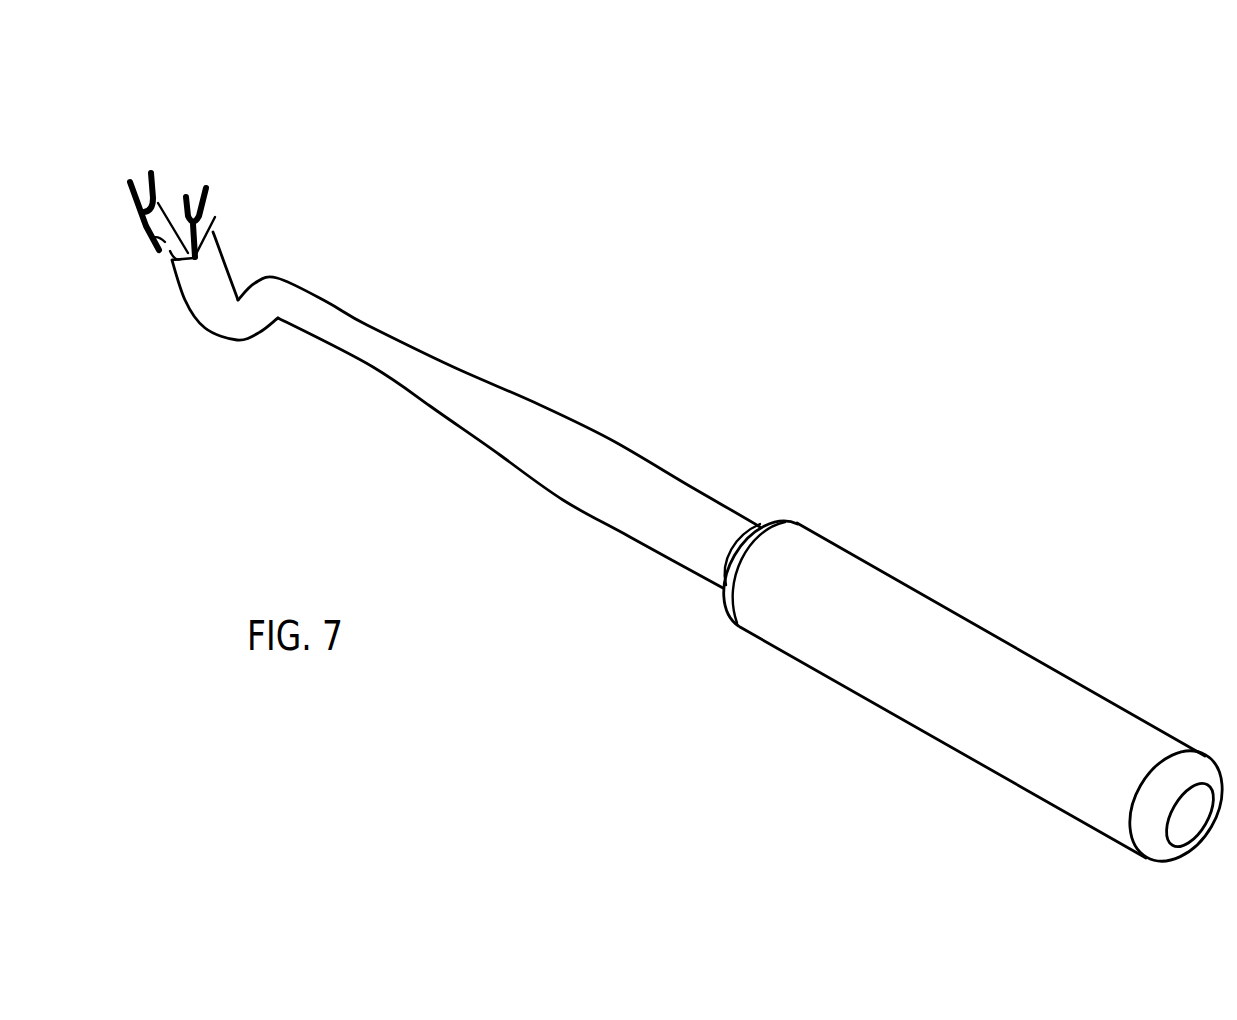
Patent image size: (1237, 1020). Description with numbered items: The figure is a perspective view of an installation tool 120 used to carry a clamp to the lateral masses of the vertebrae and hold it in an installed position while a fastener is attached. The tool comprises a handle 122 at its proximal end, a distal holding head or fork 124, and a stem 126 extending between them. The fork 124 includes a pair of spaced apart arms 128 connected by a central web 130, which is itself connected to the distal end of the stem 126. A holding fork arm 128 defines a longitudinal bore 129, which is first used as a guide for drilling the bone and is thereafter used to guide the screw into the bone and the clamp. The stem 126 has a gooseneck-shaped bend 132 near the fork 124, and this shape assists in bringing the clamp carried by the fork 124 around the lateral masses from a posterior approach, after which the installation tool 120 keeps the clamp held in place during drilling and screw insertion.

The installation tool 120 is at (527, 377).
The handle 122 is at (942, 643).
The holding fork 124 is at (214, 230).
The stem 126 is at (365, 337).
The arm 128 is at (211, 194).
The longitudinal bore 129 is at (137, 168).
The central web 130 is at (144, 243).
The gooseneck-shaped bend 132 is at (217, 317).